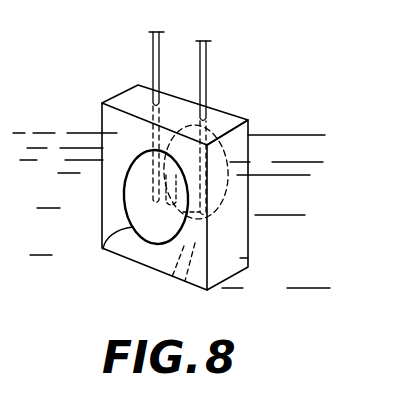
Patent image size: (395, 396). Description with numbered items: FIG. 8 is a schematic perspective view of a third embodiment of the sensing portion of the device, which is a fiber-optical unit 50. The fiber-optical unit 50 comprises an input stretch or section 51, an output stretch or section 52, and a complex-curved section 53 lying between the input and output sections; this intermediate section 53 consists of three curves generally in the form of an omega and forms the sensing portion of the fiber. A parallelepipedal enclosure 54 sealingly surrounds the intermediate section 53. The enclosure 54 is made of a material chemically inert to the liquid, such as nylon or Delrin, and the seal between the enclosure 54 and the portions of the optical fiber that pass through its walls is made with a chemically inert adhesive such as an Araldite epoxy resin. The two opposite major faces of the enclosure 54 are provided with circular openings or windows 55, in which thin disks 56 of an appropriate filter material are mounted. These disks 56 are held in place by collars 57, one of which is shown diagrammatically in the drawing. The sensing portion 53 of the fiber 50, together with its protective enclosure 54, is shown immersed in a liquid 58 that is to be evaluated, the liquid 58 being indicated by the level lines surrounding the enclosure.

The fiber-optical unit 50 is at (240, 108).
The input stretch or section 51 is at (152, 56).
The output stretch or section 52 is at (207, 64).
The complex-curved section 53 is at (133, 211).
The parallelepipedal enclosure 54 is at (233, 240).
The circular openings or windows 55 is at (174, 268).
The thin disks 56 is at (140, 193).
The collars 57 is at (104, 251).
The liquid 58 is at (48, 135).